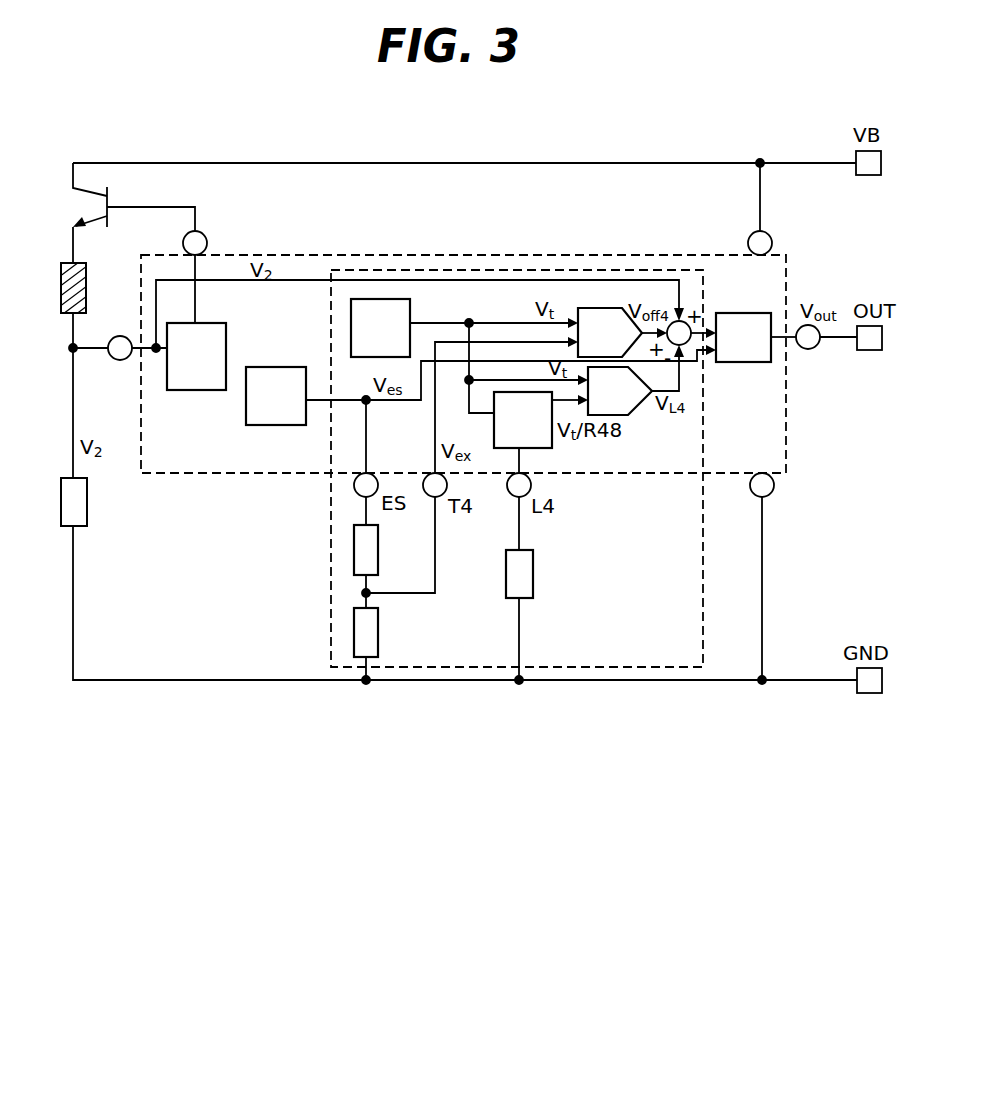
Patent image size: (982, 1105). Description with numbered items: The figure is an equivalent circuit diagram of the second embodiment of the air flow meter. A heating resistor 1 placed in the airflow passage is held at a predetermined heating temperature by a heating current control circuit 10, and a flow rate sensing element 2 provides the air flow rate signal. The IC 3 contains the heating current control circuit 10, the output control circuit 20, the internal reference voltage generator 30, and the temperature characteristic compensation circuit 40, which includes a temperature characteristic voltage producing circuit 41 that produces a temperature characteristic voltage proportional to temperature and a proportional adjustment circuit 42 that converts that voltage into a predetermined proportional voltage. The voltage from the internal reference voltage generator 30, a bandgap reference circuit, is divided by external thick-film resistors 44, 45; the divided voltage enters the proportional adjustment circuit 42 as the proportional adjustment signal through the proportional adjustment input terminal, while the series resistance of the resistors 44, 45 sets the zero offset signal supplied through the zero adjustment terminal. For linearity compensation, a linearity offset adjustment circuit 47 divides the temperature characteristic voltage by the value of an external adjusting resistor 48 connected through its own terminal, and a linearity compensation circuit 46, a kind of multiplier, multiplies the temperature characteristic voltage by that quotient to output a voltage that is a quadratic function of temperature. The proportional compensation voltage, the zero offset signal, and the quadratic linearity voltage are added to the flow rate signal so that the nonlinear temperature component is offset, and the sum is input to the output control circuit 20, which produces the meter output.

The heating resistor 1 is at (61, 288).
The flow rate sensing element 2 is at (61, 498).
The IC 3 is at (665, 253).
The heating current control circuit 10 is at (203, 323).
The output control circuit 20 is at (728, 313).
The internal reference voltage generator 30 is at (262, 367).
The temperature characteristic compensation circuit 40 is at (703, 578).
The temperature characteristic voltage producing circuit 41 is at (388, 299).
The proportional adjustment circuit 42 is at (597, 308).
The resistor 44 is at (354, 545).
The resistor 45 is at (354, 630).
The linearity compensation circuit 46 is at (632, 410).
The linearity offset adjustment circuit 47 is at (540, 448).
The adjusting resistor 48 is at (533, 574).